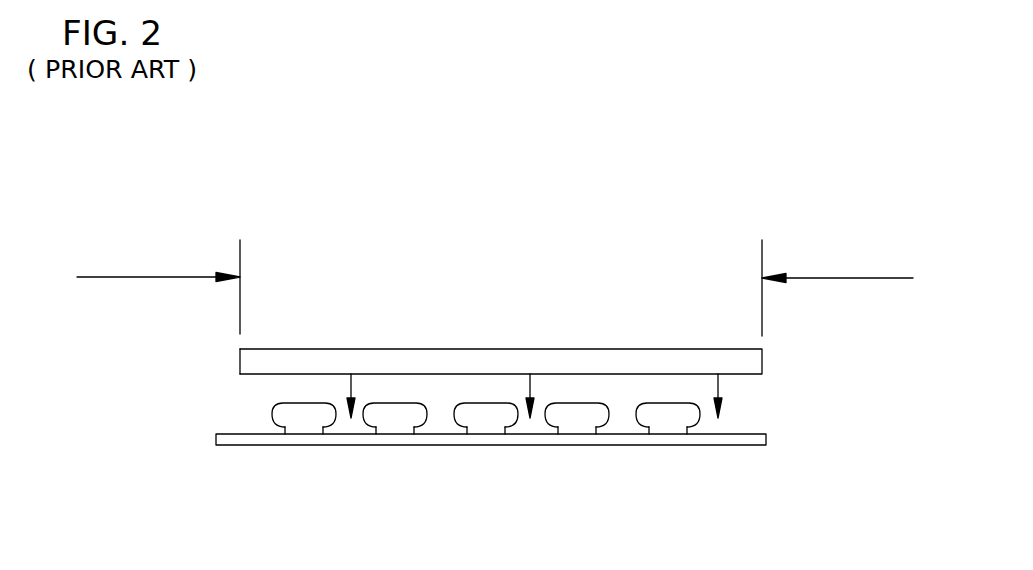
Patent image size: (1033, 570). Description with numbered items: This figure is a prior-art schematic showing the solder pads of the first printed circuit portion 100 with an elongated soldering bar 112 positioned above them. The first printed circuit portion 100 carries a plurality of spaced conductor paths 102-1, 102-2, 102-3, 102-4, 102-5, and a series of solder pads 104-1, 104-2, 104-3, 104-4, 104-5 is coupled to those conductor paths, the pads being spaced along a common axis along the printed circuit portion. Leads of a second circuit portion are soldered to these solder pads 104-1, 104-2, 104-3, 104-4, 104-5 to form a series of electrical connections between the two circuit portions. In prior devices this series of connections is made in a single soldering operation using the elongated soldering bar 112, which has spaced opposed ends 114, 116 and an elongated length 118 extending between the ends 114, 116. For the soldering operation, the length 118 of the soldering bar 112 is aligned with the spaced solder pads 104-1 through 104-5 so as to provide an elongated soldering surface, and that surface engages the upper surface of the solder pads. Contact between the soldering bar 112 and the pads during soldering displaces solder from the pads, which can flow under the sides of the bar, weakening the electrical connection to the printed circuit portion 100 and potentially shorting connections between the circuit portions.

The first printed circuit portion 100 is at (772, 433).
The conductor path 102-1 is at (666, 430).
The conductor path 102-2 is at (575, 430).
The conductor path 102-3 is at (484, 430).
The conductor path 102-4 is at (393, 430).
The conductor path 102-5 is at (302, 430).
The solder pad 104-1 is at (666, 390).
The solder pad 104-2 is at (574, 390).
The solder pad 104-3 is at (482, 390).
The solder pad 104-4 is at (391, 390).
The solder pad 104-5 is at (300, 390).
The elongated soldering bar 112 is at (642, 336).
The end 114 is at (239, 361).
The end 116 is at (750, 362).
The elongated length 118 is at (149, 277).